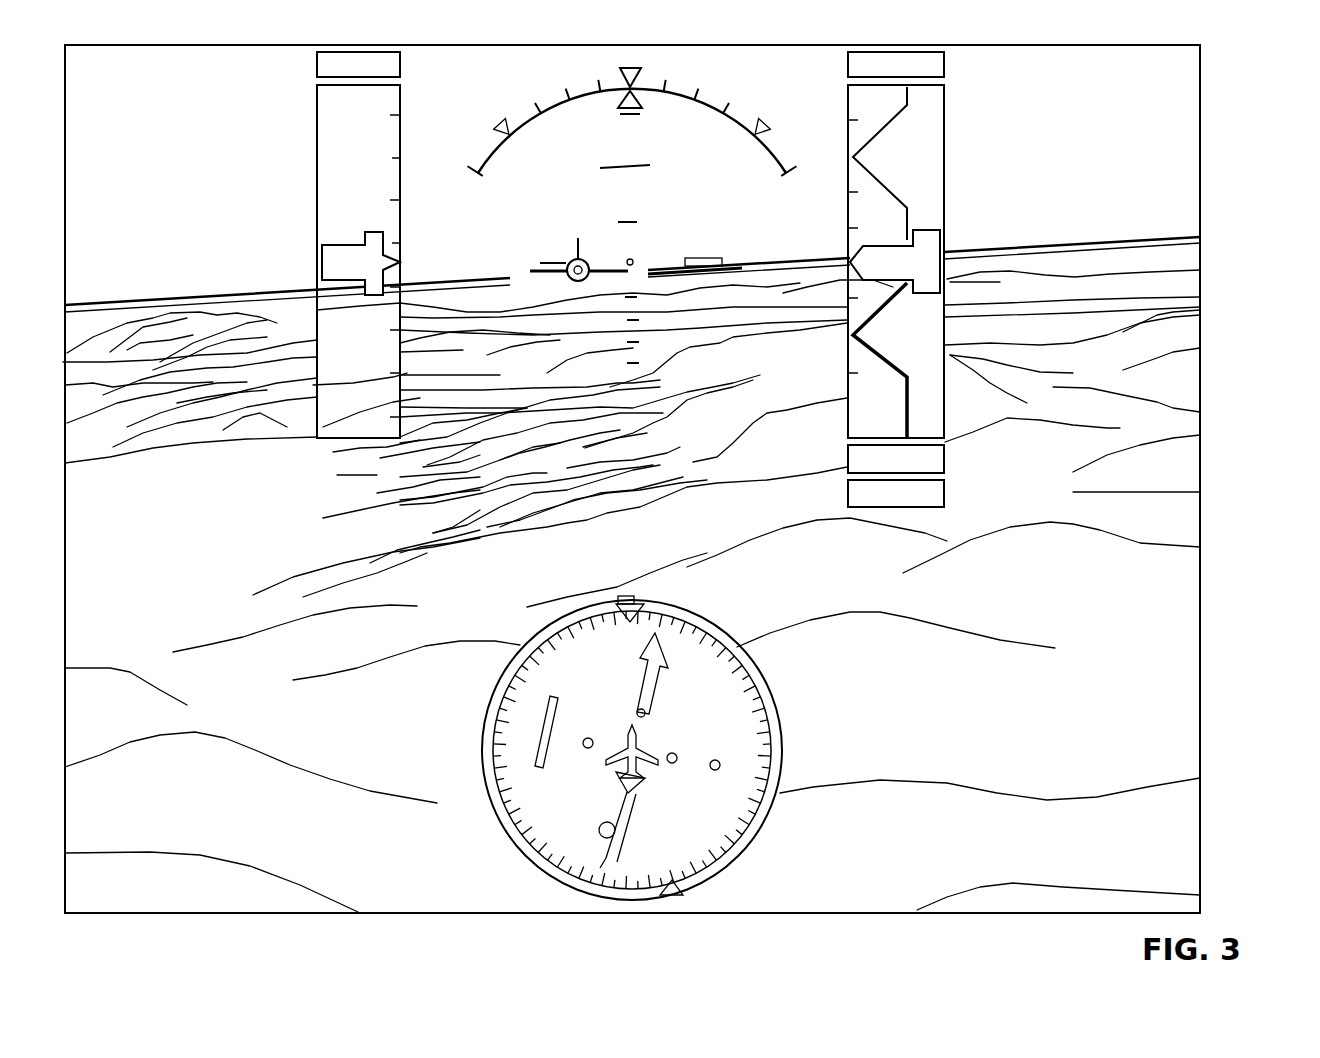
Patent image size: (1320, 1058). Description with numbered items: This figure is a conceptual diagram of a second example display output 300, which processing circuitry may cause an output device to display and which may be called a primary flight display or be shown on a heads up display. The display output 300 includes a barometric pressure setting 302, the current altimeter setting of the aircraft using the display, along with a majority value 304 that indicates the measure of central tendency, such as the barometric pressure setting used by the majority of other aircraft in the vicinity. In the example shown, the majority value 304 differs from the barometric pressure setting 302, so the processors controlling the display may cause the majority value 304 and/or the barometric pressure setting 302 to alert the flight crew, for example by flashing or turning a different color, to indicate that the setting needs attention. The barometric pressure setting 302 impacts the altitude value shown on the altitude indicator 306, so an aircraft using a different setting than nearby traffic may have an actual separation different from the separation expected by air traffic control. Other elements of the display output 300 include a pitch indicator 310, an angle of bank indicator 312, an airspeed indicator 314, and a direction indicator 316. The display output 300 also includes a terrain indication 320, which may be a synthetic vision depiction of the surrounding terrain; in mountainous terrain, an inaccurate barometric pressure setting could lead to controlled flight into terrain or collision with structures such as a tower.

The display output 300 is at (1225, 168).
The barometric pressure setting 302 is at (836, 457).
The majority value 304 is at (960, 492).
The altitude indicator 306 is at (962, 141).
The pitch indicator 310 is at (660, 200).
The angle of bank indicator 312 is at (532, 88).
The airspeed indicator 314 is at (300, 222).
The direction indicator 316 is at (800, 722).
The terrain indication 320 is at (270, 558).